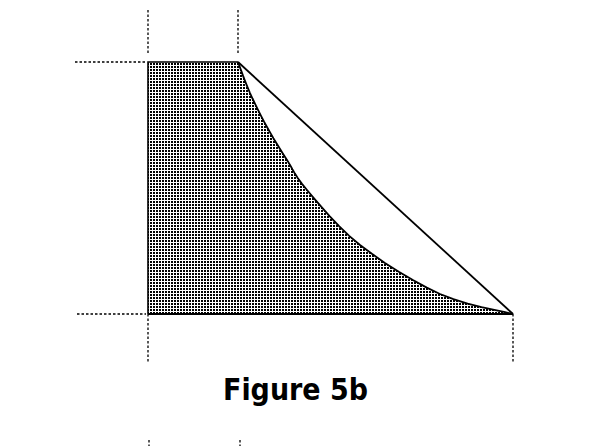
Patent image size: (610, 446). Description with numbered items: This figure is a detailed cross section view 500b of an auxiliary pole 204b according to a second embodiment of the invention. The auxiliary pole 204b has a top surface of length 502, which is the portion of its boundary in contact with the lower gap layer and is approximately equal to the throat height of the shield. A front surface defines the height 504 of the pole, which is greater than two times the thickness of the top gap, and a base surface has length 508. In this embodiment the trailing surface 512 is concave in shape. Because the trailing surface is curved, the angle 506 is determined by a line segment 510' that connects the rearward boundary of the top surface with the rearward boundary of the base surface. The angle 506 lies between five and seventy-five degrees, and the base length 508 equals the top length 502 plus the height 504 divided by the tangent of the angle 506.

The detailed cross section view 500b is at (330, 184).
The length of top surface 502 is at (257, 33).
The height 504 is at (98, 72).
The angle 506 is at (532, 343).
The length of base surface 508 is at (139, 343).
The line segment 510' is at (375, 188).
The trailing surface 512 is at (285, 158).
The auxiliary pole 204b is at (203, 267).